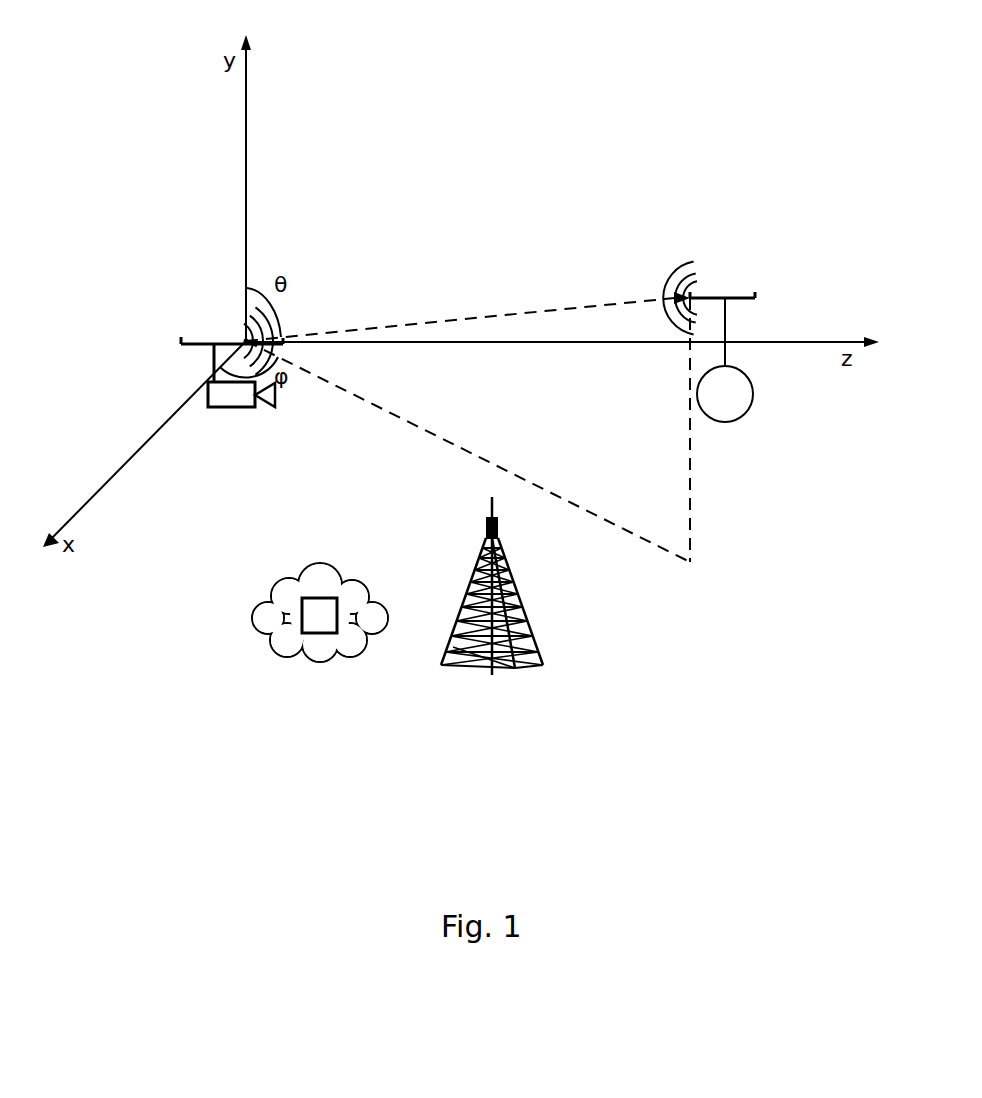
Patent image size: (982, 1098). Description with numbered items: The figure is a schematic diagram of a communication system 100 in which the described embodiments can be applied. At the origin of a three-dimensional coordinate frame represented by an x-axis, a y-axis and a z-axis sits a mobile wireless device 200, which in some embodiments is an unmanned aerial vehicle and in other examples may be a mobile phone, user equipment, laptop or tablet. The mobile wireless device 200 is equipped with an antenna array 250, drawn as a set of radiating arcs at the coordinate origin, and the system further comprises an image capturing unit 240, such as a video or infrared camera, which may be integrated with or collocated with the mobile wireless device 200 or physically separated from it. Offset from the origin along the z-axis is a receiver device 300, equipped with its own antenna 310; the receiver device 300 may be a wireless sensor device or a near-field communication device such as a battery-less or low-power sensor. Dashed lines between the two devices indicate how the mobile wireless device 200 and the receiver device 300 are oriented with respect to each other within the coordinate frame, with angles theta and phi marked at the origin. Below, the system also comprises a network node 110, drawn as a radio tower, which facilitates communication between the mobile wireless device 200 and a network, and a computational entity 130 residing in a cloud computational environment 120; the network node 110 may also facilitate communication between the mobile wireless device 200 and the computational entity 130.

The communication system 100 is at (670, 70).
The network node 110 is at (497, 532).
The cloud computational environment 120 is at (320, 635).
The computational entity 130 is at (320, 604).
The mobile wireless device 200 is at (192, 366).
The image capturing unit 240 is at (260, 406).
The antenna array 250 is at (235, 341).
The receiver device 300 is at (757, 333).
The antenna 310 is at (740, 298).